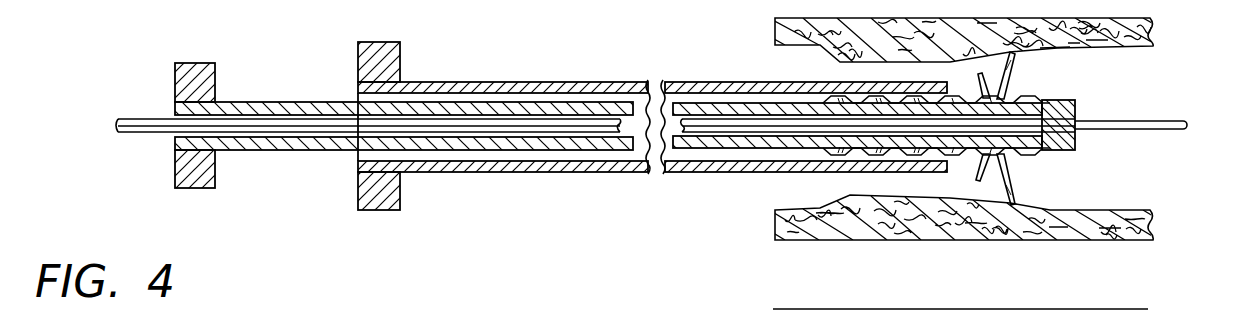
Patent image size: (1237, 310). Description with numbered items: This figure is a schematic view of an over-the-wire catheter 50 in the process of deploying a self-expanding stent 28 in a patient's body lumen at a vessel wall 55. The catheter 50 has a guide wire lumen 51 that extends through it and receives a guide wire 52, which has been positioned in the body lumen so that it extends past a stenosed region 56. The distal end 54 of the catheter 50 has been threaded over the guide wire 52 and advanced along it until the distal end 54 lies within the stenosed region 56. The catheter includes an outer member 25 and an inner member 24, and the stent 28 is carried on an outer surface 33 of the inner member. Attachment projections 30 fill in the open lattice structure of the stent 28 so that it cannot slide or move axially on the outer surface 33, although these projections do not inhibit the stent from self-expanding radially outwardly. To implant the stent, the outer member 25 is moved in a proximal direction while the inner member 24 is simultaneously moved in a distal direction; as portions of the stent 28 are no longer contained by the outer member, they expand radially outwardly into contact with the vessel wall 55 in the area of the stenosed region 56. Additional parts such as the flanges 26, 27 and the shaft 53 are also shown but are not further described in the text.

The inner member 24 is at (275, 152).
The outer member 25 is at (577, 173).
The inner tube flange 26 is at (200, 188).
The outer tube flange 27 is at (377, 210).
The self-expanding stent 28 is at (1015, 54).
The attachment projections 30 is at (1010, 173).
The outer surface 33 is at (804, 102).
The over-the-wire catheter 50 is at (552, 72).
The guide wire lumen 51 is at (434, 133).
The guide wire 52 is at (495, 132).
The shaft 53 is at (173, 145).
The distal end 54 is at (1077, 143).
The vessel wall 55 is at (1133, 48).
The stenosed region 56 is at (1055, 48).